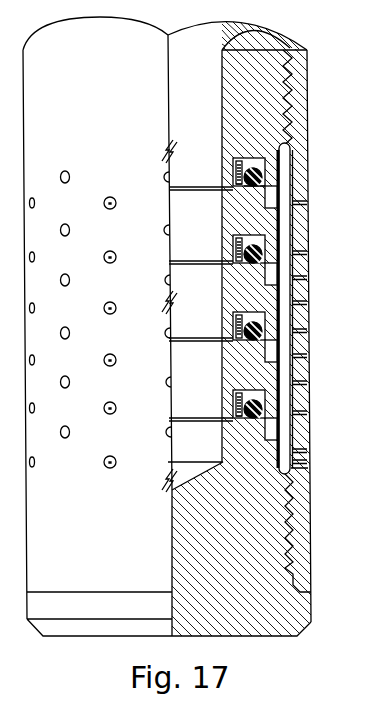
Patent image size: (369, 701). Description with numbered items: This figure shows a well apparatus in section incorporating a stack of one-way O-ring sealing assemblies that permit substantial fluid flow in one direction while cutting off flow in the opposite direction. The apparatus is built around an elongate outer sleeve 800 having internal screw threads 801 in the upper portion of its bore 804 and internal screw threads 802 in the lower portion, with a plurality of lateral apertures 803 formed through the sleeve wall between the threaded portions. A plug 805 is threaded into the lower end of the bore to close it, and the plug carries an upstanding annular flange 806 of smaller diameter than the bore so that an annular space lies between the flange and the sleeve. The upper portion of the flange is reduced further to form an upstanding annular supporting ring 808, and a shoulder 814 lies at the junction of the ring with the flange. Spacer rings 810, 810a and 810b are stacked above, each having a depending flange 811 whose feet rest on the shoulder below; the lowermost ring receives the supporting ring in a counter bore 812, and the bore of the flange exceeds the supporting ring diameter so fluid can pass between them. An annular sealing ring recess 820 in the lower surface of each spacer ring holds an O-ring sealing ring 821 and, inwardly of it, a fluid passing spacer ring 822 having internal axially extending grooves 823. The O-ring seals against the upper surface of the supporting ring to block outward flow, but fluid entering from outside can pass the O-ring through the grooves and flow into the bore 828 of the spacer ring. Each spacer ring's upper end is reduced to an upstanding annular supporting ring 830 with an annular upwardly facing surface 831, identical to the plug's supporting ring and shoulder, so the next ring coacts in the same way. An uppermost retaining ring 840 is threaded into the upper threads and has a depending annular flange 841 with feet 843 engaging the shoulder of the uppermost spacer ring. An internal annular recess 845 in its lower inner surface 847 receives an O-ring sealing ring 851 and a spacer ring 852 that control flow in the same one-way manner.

The outer sleeve 800 is at (258, 102).
The internal screw threads 801 is at (292, 78).
The internal screw threads 802 is at (288, 520).
The lateral apertures 803 is at (108, 198).
The bore 804 is at (295, 289).
The plug 805 is at (248, 610).
The upstanding annular flange 806 is at (252, 457).
The upstanding annular supporting ring 808 is at (250, 435).
The spacer ring 810 is at (266, 372).
The spacer ring 810a is at (241, 297).
The spacer ring 810b is at (233, 225).
The depending flange 811 is at (268, 352).
The counter bore / upper surface of supporting ring 812 is at (234, 422).
The shoulder 814 is at (286, 443).
The annular sealing ring recess 820 is at (248, 388).
The O-ring sealing ring 821 is at (266, 326).
The fluid passing spacer ring 822 is at (238, 395).
The internal axially extending grooves 823 is at (237, 409).
The bore 828 is at (223, 353).
The upstanding annular supporting ring 830 is at (288, 285).
The annular upwardly facing surface 831 is at (228, 212).
The retaining ring 840 is at (286, 100).
The depending annular flange 841 is at (262, 185).
The feet 843 is at (272, 215).
The internal annular recess 845 is at (277, 152).
The lower inner surface 847 is at (237, 178).
The O-ring sealing ring 851 is at (262, 162).
The spacer ring 852 is at (238, 163).